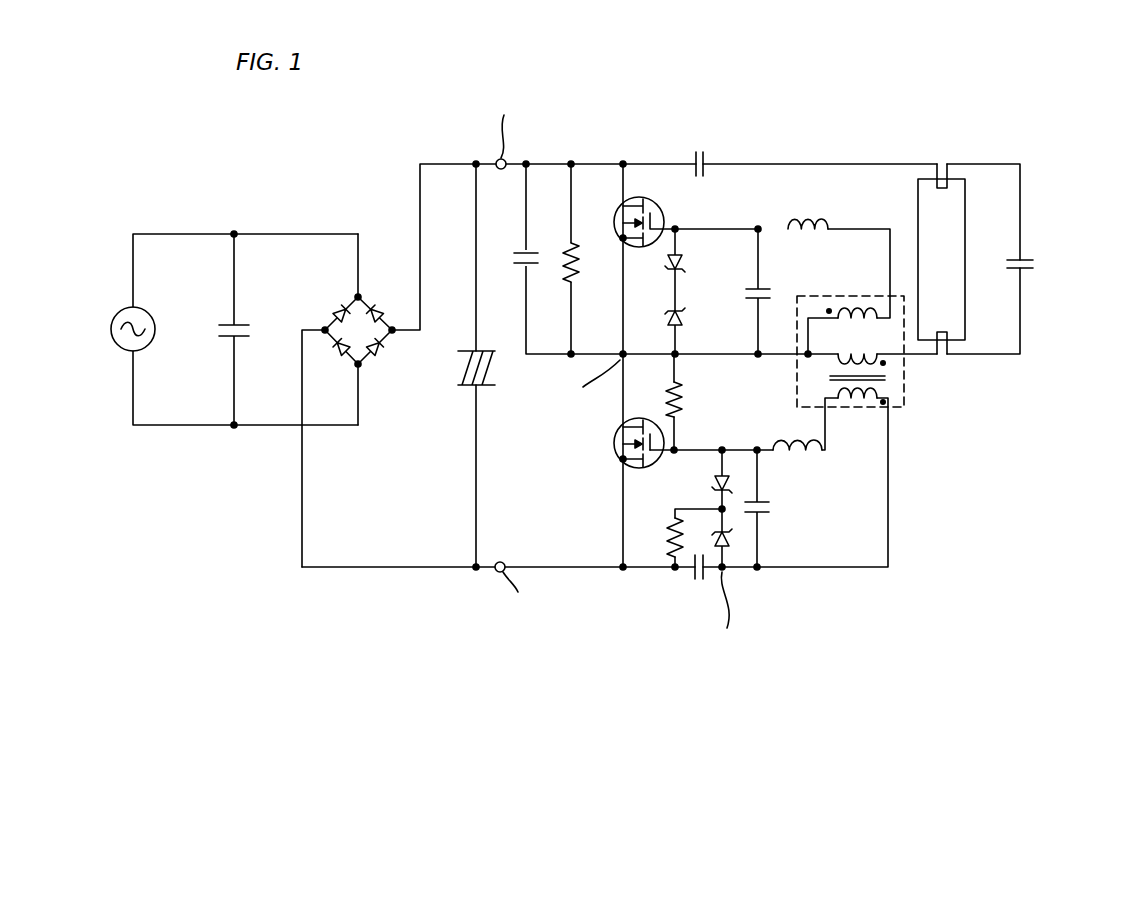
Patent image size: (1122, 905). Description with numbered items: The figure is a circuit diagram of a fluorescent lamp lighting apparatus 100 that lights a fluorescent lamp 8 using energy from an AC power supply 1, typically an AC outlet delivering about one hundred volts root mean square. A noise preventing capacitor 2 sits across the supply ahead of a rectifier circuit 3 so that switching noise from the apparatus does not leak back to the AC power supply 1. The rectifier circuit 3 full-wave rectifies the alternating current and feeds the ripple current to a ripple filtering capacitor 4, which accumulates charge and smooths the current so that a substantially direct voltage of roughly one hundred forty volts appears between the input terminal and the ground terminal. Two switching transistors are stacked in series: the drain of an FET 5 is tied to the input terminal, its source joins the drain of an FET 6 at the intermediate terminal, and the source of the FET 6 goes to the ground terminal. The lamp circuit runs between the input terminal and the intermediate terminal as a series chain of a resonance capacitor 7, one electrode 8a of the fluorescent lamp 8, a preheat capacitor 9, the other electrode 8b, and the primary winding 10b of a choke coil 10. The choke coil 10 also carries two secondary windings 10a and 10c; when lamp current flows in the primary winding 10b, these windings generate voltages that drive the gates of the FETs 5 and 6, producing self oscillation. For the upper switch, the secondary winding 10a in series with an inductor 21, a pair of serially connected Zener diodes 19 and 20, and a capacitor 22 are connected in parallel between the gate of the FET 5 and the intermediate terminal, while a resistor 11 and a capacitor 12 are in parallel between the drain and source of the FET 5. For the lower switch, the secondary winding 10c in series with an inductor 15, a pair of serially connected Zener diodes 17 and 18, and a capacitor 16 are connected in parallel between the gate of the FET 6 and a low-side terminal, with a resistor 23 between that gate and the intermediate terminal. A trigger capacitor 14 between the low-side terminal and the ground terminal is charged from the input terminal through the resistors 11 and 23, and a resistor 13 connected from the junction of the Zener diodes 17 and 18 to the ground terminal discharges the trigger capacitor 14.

The AC power supply 1 is at (120, 310).
The noise preventing capacitor 2 is at (219, 330).
The rectifier circuit 3 is at (362, 295).
The ripple filtering capacitor 4 is at (458, 370).
The FET 5 is at (642, 197).
The FET 6 is at (614, 452).
The resonance capacitor 7 is at (700, 151).
The fluorescent lamp 8 is at (994, 259).
The electrode 8a is at (947, 184).
The other electrode 8b is at (947, 332).
The preheat capacitor 9 is at (1033, 263).
The choke coil 10 is at (862, 351).
The secondary winding 10a is at (860, 308).
The primary winding 10b is at (838, 362).
The secondary winding 10c is at (870, 403).
The resistor 11 is at (568, 243).
The capacitor 12 is at (512, 259).
The resistor 13 is at (668, 545).
The trigger capacitor 14 is at (697, 582).
The inductor 15 is at (800, 463).
The capacitor 16 is at (773, 507).
The Zener diode 17 is at (712, 485).
The Zener diode 18 is at (727, 547).
The Zener diode 19 is at (680, 255).
The Zener diode 20 is at (670, 318).
The inductor 21 is at (828, 218).
The capacitor 22 is at (745, 292).
The resistor 23 is at (684, 395).
The fluorescent lamp lighting apparatus 100 is at (912, 594).